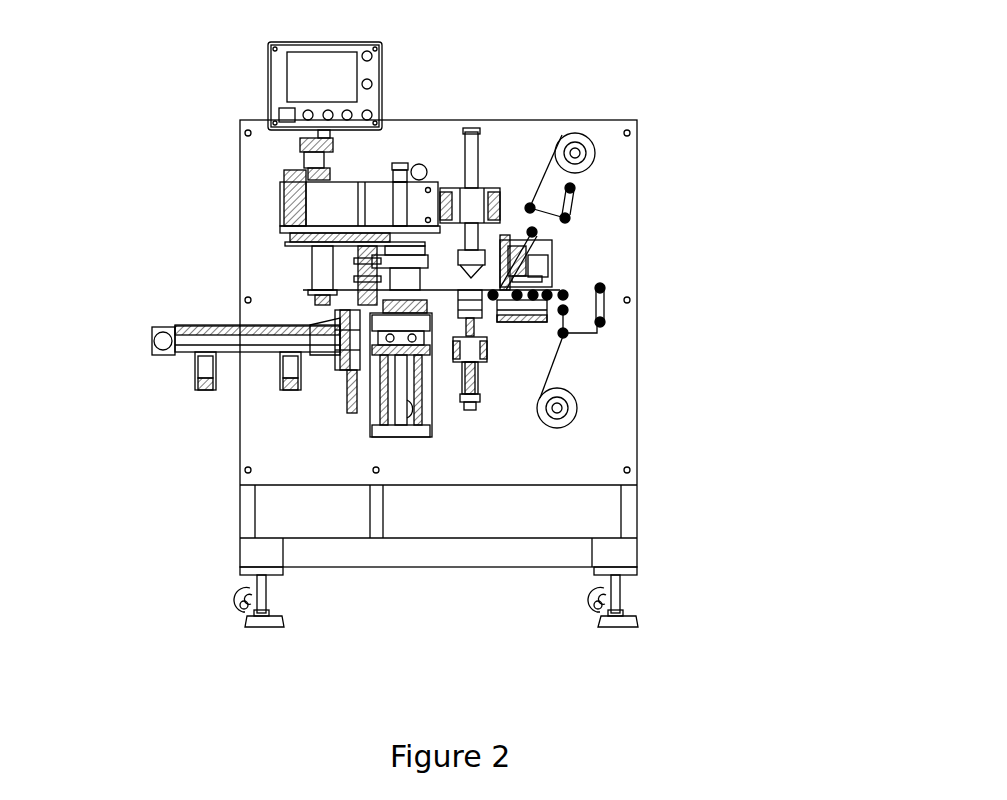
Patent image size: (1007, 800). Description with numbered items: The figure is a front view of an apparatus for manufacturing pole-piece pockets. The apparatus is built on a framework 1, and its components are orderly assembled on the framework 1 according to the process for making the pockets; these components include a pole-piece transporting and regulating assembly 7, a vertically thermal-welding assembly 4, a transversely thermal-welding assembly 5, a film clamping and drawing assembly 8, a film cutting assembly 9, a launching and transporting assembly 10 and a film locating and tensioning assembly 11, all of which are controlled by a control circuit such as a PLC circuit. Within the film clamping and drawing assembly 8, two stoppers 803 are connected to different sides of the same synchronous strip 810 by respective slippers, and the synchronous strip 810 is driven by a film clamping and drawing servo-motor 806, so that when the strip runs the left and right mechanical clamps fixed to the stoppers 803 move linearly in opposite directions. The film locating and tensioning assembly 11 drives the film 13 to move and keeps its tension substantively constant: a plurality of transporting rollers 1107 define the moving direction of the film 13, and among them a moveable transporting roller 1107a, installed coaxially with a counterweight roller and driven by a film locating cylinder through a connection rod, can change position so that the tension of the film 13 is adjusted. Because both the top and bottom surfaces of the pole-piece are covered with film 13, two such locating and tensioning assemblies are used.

The framework 1 is at (615, 455).
The vertically thermal-welding assembly 4 is at (468, 350).
The transversely thermal-welding assembly 5 is at (370, 357).
The pole-piece transporting and regulating assembly 7 is at (553, 260).
The film clamping and drawing assembly 8 is at (300, 226).
The film cutting assembly 9 is at (343, 362).
The launching and transporting assembly 10 is at (235, 343).
The film locating and tensioning assembly 11 is at (572, 193).
The film 13 is at (437, 290).
The stoppers 803 is at (320, 263).
The film clamping and drawing servo-motor 806 is at (302, 185).
The synchronous strip 810 is at (348, 237).
The transporting rollers 1107 is at (536, 229).
The moveable transporting roller 1107a is at (568, 216).